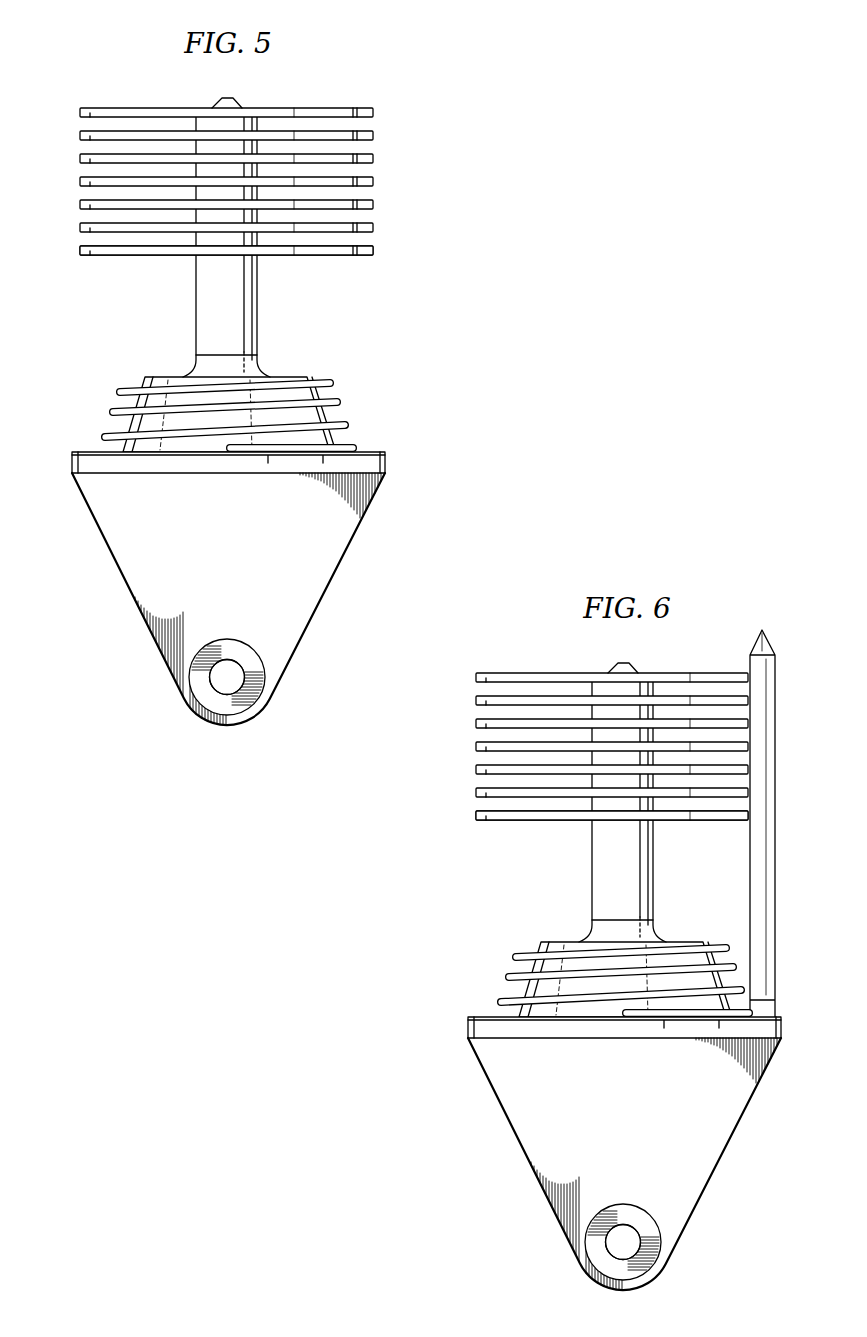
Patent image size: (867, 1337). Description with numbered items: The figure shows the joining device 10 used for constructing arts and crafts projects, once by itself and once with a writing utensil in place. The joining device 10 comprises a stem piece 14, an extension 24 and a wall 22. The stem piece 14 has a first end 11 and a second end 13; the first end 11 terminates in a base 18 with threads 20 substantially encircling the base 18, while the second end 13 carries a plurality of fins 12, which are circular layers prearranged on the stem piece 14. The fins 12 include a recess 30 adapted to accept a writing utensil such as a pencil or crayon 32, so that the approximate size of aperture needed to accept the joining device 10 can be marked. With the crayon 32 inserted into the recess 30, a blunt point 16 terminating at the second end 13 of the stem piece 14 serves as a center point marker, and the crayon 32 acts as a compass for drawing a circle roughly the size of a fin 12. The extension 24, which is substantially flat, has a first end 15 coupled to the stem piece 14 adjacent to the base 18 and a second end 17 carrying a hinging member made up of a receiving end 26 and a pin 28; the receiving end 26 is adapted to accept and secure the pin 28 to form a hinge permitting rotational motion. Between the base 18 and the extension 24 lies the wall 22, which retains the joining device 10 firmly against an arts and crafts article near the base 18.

In FIG. 5, the joining device 10 is at (470, 283).
In FIG. 6, the joining device 10 is at (580, 960).
In FIG. 5, the first end 11 is at (98, 417).
In FIG. 6, the first end 11 is at (563, 972).
In FIG. 5, the fins 12 is at (70, 105).
In FIG. 6, the fins 12 is at (587, 746).
In FIG. 5, the second end 13 is at (345, 267).
In FIG. 6, the second end 13 is at (612, 850).
In FIG. 5, the stem piece 14 is at (196, 308).
In FIG. 6, the stem piece 14 is at (604, 812).
In FIG. 5, the first end 15 is at (395, 489).
In FIG. 6, the first end 15 is at (632, 1153).
In FIG. 5, the blunt point 16 is at (216, 104).
In FIG. 6, the blunt point 16 is at (607, 653).
In FIG. 5, the second end 17 is at (208, 634).
In FIG. 6, the second end 17 is at (606, 1198).
In FIG. 5, the base 18 is at (143, 381).
In FIG. 6, the base 18 is at (613, 969).
In FIG. 5, the threads 20 is at (357, 377).
In FIG. 6, the threads 20 is at (599, 980).
In FIG. 5, the wall 22 is at (70, 460).
In FIG. 6, the wall 22 is at (600, 1034).
In FIG. 5, the extension 24 is at (332, 585).
In FIG. 6, the extension 24 is at (624, 1164).
In FIG. 5, the receiving end 26 is at (238, 640).
In FIG. 6, the receiving end 26 is at (628, 1217).
In FIG. 5, the pin 28 is at (227, 677).
In FIG. 6, the pin 28 is at (623, 1242).
In FIG. 5, the recess 30 is at (362, 109).
In FIG. 6, the crayon 32 is at (787, 823).